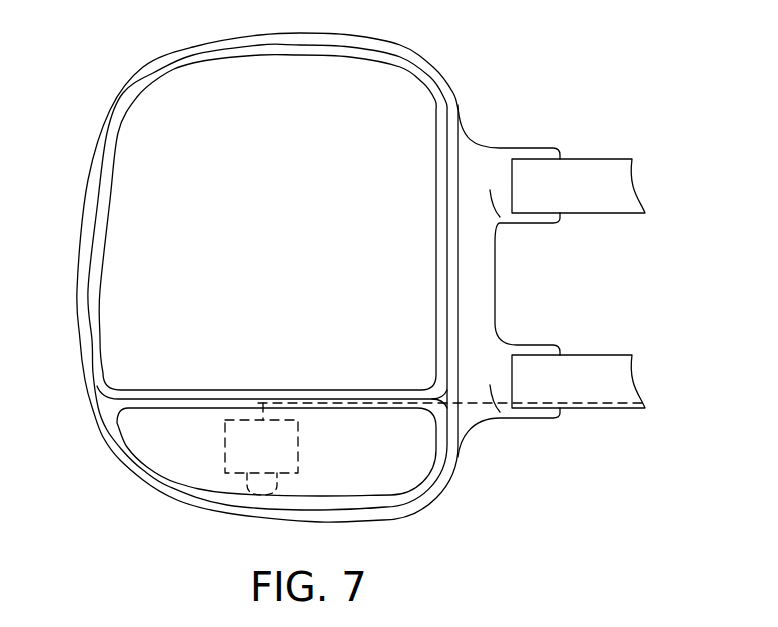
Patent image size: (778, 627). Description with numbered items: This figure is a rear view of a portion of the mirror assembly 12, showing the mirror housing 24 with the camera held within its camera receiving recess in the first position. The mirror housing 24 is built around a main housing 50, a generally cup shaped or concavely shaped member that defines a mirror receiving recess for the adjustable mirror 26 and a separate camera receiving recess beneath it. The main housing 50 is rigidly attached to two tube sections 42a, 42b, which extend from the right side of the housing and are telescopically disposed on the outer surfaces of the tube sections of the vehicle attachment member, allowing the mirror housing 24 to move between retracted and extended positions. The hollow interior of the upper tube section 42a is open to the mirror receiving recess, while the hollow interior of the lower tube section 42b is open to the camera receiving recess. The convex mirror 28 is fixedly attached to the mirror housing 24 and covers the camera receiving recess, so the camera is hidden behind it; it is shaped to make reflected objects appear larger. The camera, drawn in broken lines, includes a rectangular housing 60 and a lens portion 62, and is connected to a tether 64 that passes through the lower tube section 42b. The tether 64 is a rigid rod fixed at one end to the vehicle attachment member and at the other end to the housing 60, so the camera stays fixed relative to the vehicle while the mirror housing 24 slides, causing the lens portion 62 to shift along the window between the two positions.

The mirror assembly 12 is at (528, 46).
The mirror housing 24 is at (353, 33).
The adjustable mirror 26 is at (160, 167).
The convex mirror 28 is at (153, 435).
The tube section 42a is at (592, 182).
The tube section 42b is at (597, 375).
The main housing 50 is at (232, 37).
The housing 60 is at (277, 448).
The lens portion 62 is at (265, 495).
The tether 64 is at (480, 405).